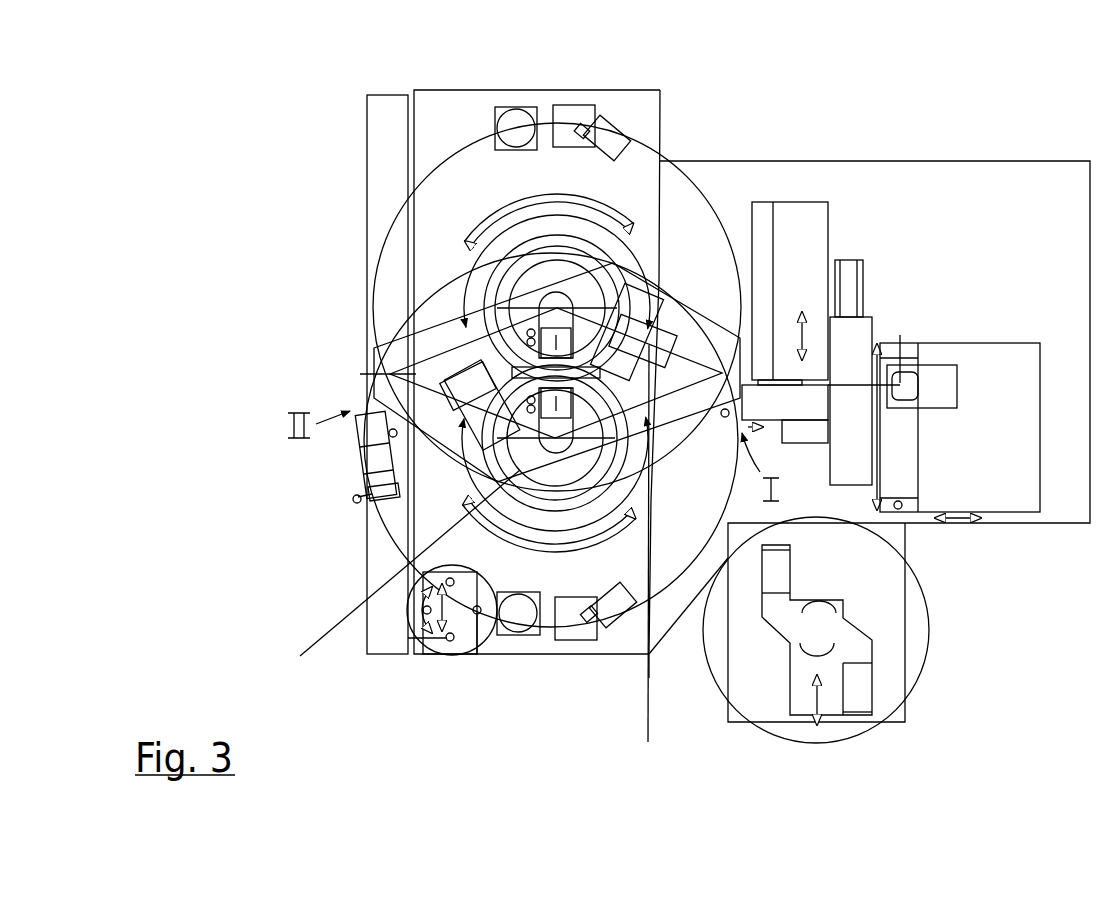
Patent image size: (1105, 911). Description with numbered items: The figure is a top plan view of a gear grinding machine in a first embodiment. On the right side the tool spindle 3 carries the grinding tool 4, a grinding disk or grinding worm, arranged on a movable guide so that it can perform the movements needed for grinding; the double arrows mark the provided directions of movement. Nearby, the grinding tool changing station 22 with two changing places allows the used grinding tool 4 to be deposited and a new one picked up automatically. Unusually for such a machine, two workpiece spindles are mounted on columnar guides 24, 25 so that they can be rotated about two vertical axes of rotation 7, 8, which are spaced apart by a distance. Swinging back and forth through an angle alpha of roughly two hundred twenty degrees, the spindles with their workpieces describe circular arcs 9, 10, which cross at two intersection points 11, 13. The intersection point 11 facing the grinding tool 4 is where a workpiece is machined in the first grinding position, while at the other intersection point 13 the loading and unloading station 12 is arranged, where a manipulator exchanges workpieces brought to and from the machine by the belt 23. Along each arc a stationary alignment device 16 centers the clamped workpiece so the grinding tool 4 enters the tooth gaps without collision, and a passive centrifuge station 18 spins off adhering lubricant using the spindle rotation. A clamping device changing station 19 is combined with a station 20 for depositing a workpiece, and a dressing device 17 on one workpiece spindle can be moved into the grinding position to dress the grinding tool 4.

The tool spindle 3 is at (774, 340).
The grinding tool 4 is at (787, 403).
The axis of rotation 7 is at (944, 100).
The axis of rotation 8 is at (553, 306).
The circular arc 9 is at (406, 541).
The circular arc 10 is at (672, 175).
The intersection point 11 is at (700, 210).
The loading and unloading station 12 is at (330, 391).
The intersection point 13 is at (392, 374).
The alignment device 16 is at (603, 612).
The dressing device 17 is at (370, 478).
The centrifuge station 18 is at (512, 118).
The clamping device changing station 19 is at (463, 643).
The station for depositing a workpiece 20 is at (397, 683).
The grinding tool changing station 22 is at (800, 660).
The belt 23 is at (380, 135).
The columnar guide 24 is at (387, 579).
The columnar guide 25 is at (583, 267).